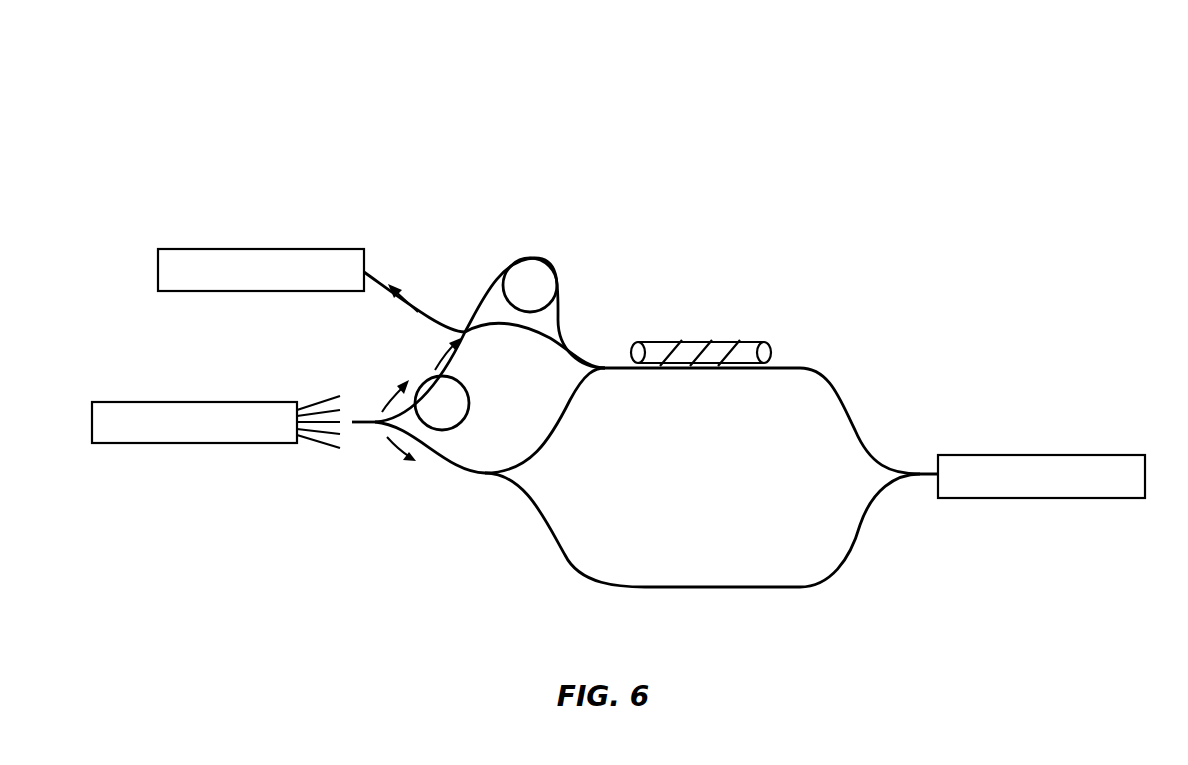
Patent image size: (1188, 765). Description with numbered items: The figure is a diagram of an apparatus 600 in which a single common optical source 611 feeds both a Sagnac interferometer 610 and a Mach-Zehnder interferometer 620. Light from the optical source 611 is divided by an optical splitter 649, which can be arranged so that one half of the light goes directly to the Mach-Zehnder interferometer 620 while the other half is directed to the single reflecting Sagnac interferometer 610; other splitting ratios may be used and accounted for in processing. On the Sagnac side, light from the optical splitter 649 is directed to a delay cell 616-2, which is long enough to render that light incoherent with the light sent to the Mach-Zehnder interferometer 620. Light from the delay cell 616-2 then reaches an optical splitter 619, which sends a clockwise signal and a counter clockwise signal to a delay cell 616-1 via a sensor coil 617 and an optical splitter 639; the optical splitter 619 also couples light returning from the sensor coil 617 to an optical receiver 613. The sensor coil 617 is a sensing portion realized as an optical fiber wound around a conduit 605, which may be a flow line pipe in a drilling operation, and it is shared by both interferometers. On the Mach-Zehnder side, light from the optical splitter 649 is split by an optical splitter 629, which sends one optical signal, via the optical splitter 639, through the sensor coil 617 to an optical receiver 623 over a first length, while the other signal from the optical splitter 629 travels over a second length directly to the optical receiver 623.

The apparatus 600 is at (173, 68).
The Sagnac interferometer 610 is at (124, 308).
The optical source 611 is at (110, 401).
The optical receiver 613 is at (178, 250).
The delay cell 616-1 is at (557, 270).
The delay cell 616-2 is at (462, 380).
The sensor coil 617 is at (670, 346).
The conduit 605 is at (752, 343).
The optical splitter 619 is at (464, 330).
The Mach-Zehnder interferometer 620 is at (124, 508).
The optical receiver 623 is at (957, 455).
The optical splitter 629 is at (482, 476).
The optical splitter 639 is at (618, 369).
The optical splitter 649 is at (370, 425).